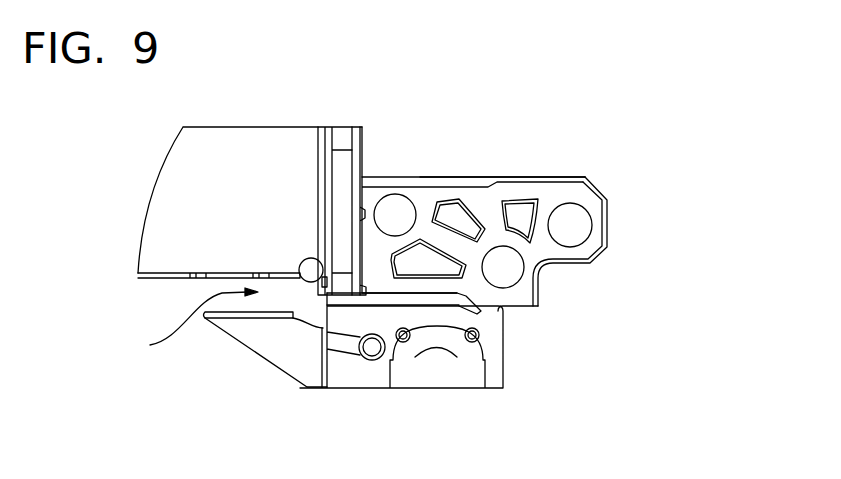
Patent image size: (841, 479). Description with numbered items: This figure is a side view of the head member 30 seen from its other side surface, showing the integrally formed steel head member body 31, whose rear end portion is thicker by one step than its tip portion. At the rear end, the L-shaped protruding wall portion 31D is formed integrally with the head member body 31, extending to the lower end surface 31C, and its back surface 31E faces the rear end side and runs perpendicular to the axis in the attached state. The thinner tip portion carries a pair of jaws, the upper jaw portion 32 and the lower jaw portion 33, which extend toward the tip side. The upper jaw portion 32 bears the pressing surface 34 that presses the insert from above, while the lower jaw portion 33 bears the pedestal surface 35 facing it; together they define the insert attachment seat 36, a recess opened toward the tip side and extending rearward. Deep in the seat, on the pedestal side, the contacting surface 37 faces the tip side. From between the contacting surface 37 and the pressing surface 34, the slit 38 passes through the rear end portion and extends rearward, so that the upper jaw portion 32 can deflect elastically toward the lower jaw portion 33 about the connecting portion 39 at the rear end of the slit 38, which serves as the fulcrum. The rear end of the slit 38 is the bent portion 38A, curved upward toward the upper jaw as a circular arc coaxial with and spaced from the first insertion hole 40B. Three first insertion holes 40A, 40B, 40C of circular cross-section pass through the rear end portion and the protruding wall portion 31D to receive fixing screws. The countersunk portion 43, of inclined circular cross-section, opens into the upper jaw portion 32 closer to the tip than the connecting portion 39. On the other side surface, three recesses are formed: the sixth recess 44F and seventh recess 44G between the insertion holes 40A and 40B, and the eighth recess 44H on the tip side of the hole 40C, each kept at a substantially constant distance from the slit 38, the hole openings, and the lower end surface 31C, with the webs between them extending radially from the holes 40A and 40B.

The head member 30 is at (606, 140).
The head member body 31 is at (597, 188).
The lower end surface 31C is at (525, 178).
The protruding wall portion 31D is at (338, 135).
The back surface 31E is at (362, 163).
The upper jaw portion 32 is at (270, 348).
The lower jaw portion 33 is at (229, 150).
The pressing surface 34 is at (230, 312).
The pedestal surface 35 is at (165, 274).
The insert attachment seat 36 is at (188, 324).
The contacting surface 37 is at (302, 263).
The slit 38 is at (387, 304).
The bent portion 38A is at (495, 305).
The connecting portion 39 is at (507, 310).
The first insertion hole 40A is at (396, 214).
The first insertion hole 40B is at (513, 263).
The first insertion hole 40C is at (578, 222).
The countersunk portion 43 is at (470, 370).
The sixth recess 44F is at (417, 257).
The seventh recess 44G is at (458, 215).
The eighth recess 44H is at (532, 210).